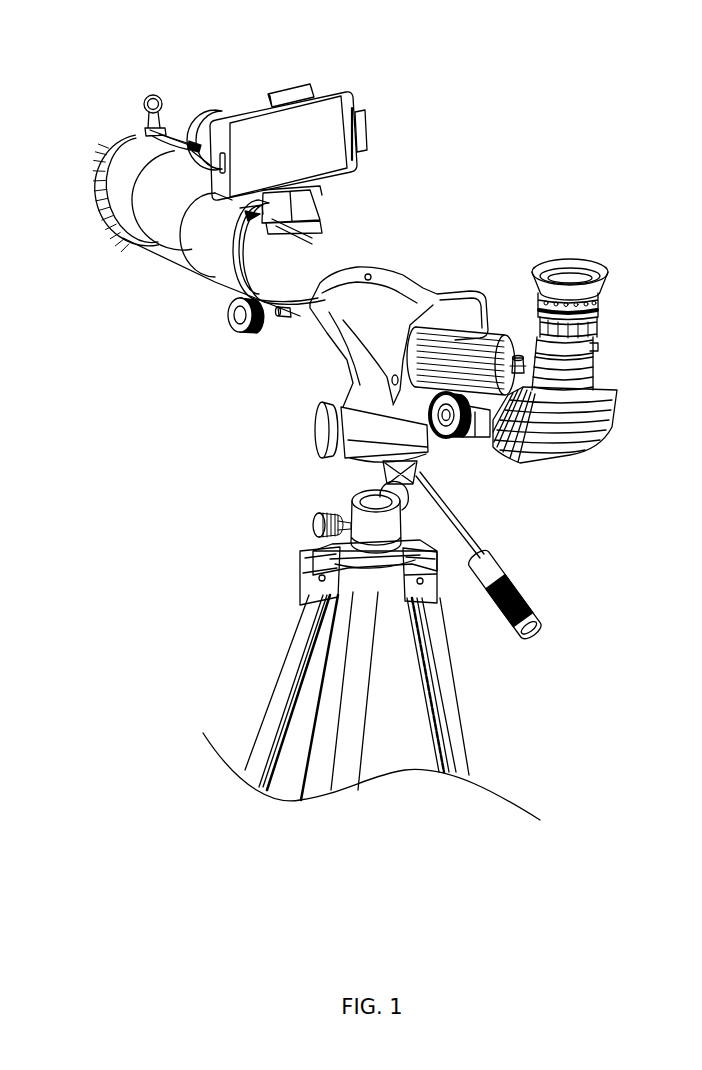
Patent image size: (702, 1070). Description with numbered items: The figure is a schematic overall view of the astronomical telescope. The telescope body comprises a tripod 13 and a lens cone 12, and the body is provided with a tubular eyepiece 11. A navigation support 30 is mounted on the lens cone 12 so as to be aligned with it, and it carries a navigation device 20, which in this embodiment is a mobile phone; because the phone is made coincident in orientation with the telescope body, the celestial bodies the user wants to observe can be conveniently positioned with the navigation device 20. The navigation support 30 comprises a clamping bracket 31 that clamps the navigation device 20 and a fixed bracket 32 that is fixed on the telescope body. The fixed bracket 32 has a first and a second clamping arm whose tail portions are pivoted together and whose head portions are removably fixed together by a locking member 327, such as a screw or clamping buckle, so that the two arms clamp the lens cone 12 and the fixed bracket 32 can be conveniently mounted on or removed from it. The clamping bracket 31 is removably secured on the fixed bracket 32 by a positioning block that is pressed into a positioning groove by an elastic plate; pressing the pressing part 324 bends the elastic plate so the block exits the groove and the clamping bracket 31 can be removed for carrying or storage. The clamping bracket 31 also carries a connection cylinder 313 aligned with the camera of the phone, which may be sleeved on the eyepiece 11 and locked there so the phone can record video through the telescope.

The eyepiece 11 is at (573, 347).
The lens cone 12 is at (316, 273).
The tripod 13 is at (295, 660).
The navigation device 20 is at (324, 128).
The navigation support 30 is at (353, 185).
The clamping bracket 31 is at (292, 97).
The connection cylinder 313 is at (208, 128).
The fixed bracket 32 is at (237, 283).
The pressing part 324 is at (253, 217).
The locking member 327 is at (242, 333).